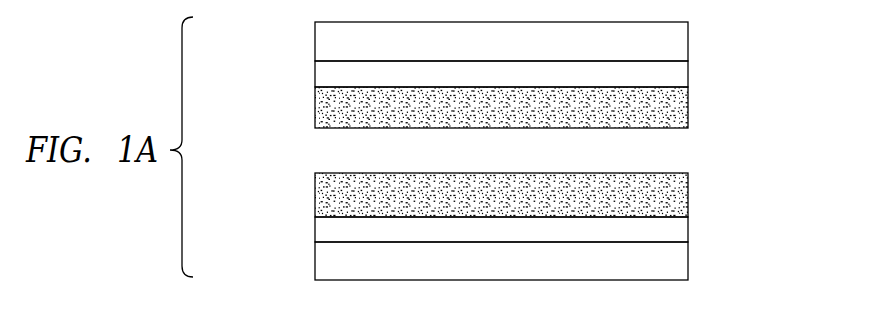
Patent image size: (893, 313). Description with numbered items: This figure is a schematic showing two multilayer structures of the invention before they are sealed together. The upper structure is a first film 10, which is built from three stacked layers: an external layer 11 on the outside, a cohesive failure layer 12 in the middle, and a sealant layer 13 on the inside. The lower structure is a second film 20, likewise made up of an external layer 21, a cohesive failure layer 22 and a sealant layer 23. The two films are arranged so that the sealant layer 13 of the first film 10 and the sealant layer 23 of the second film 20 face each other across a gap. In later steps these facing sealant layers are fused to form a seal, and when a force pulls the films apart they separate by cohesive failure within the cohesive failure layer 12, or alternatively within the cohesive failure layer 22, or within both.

The first film 10 is at (288, 54).
The external layer 11 is at (689, 47).
The cohesive failure layer 12 is at (689, 73).
The sealant layer 13 is at (689, 102).
The second film 20 is at (288, 191).
The external layer 21 is at (689, 260).
The cohesive failure layer 22 is at (689, 230).
The sealant layer 23 is at (689, 195).